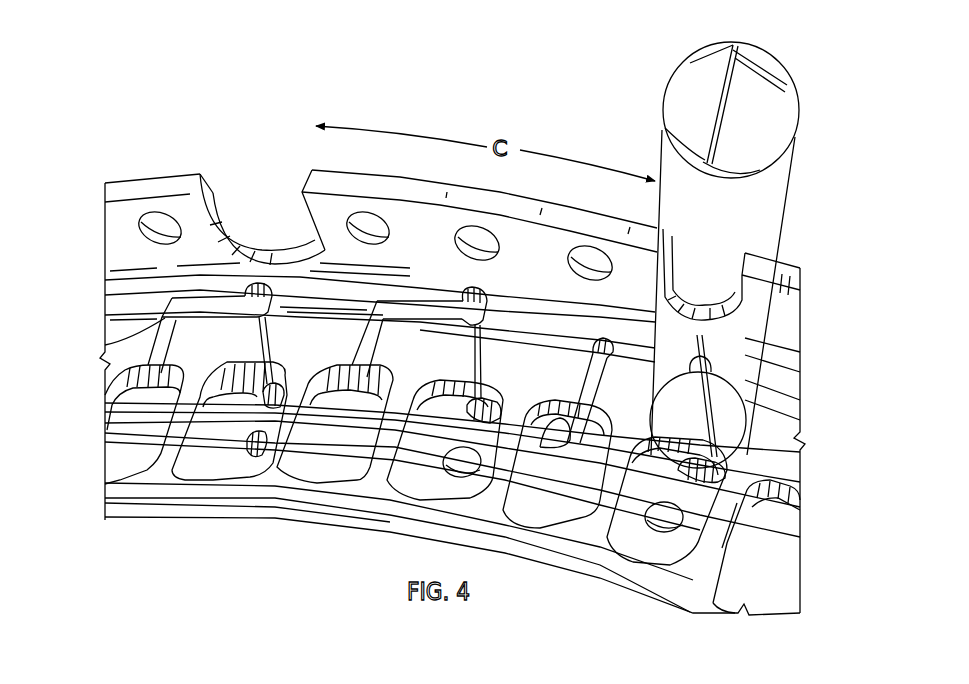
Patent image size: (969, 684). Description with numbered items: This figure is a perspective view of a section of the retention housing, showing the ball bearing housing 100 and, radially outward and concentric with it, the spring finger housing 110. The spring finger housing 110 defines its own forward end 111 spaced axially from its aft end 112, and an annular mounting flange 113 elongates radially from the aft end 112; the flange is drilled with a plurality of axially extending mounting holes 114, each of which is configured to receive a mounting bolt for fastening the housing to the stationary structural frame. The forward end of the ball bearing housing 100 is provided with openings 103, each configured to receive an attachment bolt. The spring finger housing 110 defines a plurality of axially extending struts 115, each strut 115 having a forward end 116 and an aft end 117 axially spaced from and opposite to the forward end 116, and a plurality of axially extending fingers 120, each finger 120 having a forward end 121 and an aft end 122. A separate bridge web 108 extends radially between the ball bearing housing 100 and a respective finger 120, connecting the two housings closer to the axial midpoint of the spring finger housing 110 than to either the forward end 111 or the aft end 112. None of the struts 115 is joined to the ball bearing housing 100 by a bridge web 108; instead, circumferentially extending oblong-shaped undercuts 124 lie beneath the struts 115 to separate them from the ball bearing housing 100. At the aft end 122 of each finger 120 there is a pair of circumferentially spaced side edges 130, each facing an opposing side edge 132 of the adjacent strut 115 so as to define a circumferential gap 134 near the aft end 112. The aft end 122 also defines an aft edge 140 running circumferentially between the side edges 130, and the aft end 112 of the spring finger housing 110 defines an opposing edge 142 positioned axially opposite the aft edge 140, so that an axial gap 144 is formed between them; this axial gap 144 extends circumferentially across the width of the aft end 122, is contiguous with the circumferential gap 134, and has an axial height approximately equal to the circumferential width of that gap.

The ball bearing housing 100 is at (555, 503).
The opening 103 is at (660, 530).
The bridge web 108 is at (237, 390).
The spring finger housing 110 is at (90, 376).
The forward end of spring finger housing 111 is at (287, 525).
The aft end of spring finger housing 112 is at (314, 297).
The annular mounting flange 113 is at (117, 228).
The mounting hole 114 is at (161, 226).
The strut 115 is at (717, 537).
The forward end of strut 116 is at (738, 616).
The aft end of strut 117 is at (777, 428).
The finger 120 is at (388, 445).
The forward end of finger 121 is at (362, 485).
The aft end of finger 122 is at (413, 340).
The undercut 124 is at (550, 441).
The side edge of finger aft end 130 is at (733, 117).
The side edge of strut 132 is at (712, 98).
The circumferential gap 134 is at (722, 62).
The aft edge 140 is at (215, 313).
The opposing edge 142 is at (185, 306).
The axial gap 144 is at (640, 352).